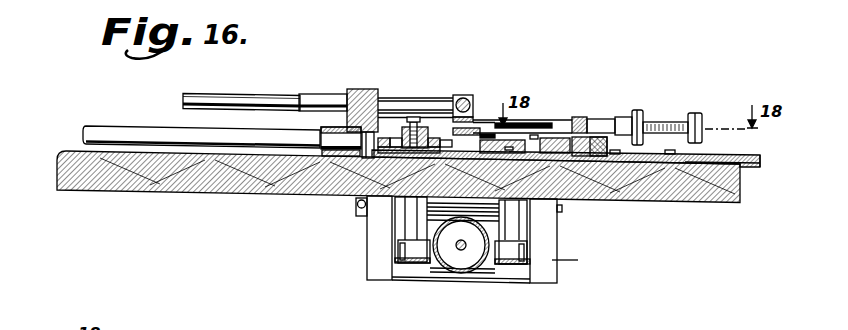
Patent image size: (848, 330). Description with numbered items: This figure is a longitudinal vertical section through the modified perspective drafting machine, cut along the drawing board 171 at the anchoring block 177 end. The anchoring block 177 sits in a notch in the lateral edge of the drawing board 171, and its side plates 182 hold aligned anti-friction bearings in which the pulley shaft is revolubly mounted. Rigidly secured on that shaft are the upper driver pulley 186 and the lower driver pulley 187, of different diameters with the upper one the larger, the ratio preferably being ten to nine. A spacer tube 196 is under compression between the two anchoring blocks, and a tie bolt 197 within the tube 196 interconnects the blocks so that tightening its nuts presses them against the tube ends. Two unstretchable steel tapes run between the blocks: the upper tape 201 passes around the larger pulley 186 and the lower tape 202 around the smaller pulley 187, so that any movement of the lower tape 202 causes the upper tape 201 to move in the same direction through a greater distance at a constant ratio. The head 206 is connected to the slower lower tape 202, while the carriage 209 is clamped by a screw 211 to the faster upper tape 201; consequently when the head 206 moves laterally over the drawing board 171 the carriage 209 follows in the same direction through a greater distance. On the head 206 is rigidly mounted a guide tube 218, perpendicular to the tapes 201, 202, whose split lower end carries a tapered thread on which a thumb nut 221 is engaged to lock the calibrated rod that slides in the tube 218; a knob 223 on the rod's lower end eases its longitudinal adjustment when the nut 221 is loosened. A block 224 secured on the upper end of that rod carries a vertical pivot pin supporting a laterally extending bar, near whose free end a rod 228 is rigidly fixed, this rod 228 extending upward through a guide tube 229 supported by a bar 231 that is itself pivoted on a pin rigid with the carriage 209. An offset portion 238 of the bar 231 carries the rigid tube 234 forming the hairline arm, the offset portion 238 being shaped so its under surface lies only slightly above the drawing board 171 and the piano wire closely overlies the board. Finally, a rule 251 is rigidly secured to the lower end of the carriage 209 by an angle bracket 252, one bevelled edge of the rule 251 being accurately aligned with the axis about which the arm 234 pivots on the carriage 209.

The drawing board 171 is at (63, 182).
The anchoring block 177 is at (552, 257).
The side plates 182 is at (375, 242).
The upper driver pulley 186 is at (396, 222).
The lower driver pulley 187 is at (525, 225).
The spacer tube 196 is at (471, 273).
The tie bolt 197 is at (458, 251).
The upper tape 201 is at (437, 128).
The lower tape 202 is at (551, 130).
The head 206 is at (597, 109).
The carriage 209 is at (472, 146).
The clamping screw 211 is at (403, 117).
The guide tube 218 is at (604, 122).
The thumb nut 221 is at (641, 114).
The knob 223 is at (698, 116).
The block 224 is at (474, 117).
The rod 228 is at (232, 96).
The guide tube 229 is at (313, 99).
The bar 231 is at (365, 89).
The tube 234 is at (128, 113).
The offset portion 238 is at (321, 128).
The rule 251 is at (756, 166).
The angle bracket 252 is at (645, 160).